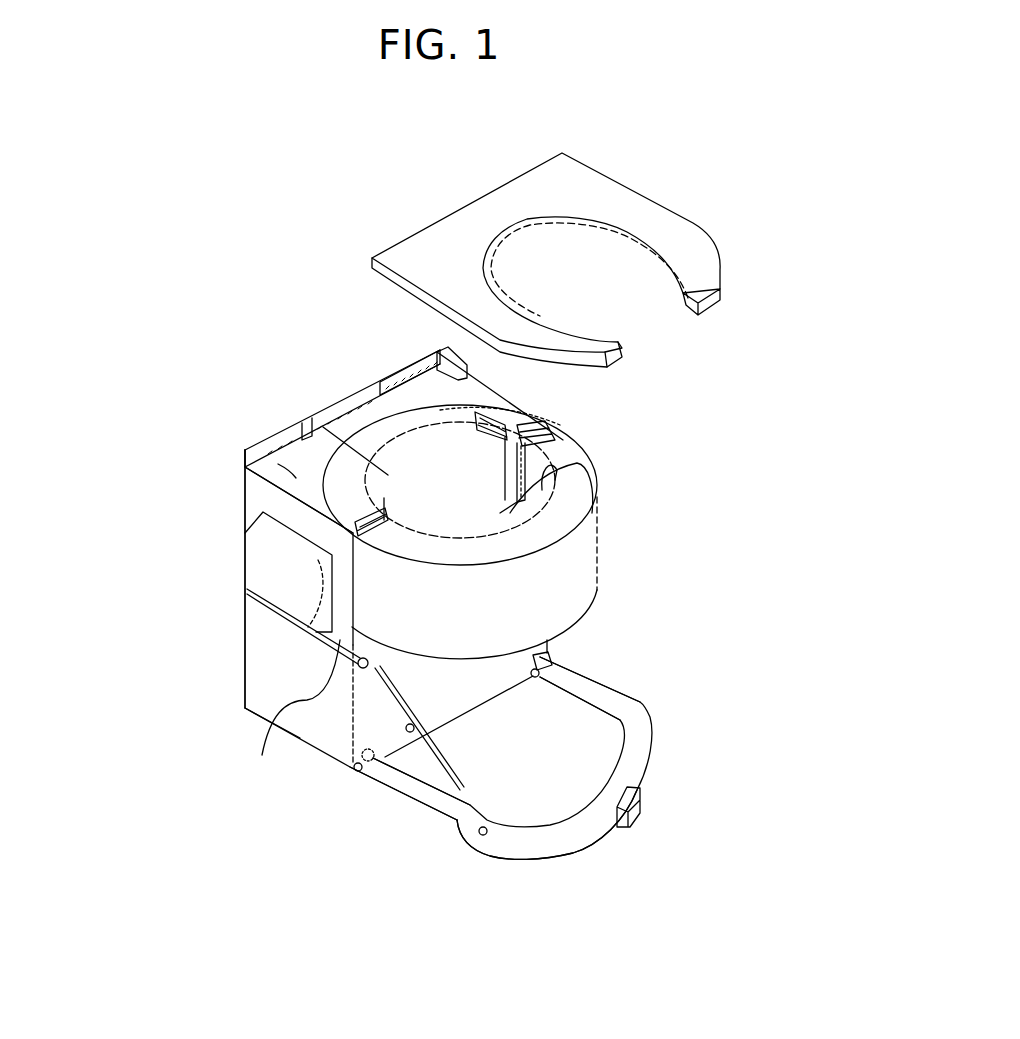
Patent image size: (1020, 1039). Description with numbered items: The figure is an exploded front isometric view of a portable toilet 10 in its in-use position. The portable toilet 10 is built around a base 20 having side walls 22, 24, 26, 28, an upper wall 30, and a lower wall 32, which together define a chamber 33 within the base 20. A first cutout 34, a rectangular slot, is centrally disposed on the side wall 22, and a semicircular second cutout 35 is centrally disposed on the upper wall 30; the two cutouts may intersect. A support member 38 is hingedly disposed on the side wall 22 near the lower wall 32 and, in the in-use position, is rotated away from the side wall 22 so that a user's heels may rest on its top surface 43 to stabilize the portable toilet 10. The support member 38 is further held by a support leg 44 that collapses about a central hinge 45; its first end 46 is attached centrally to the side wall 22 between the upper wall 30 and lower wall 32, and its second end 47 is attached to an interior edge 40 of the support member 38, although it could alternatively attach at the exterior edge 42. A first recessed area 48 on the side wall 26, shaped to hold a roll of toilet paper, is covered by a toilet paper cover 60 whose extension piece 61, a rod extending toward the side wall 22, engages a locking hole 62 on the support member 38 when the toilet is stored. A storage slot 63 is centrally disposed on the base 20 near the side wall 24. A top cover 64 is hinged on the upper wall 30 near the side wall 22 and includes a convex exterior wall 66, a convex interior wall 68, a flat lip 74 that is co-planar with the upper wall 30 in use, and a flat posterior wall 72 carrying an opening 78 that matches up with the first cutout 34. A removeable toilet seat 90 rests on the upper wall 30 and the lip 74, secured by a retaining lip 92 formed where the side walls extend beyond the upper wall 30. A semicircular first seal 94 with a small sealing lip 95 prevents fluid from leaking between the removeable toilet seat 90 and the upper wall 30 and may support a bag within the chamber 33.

The portable toilet 10 is at (171, 364).
The base 20 is at (244, 710).
The side wall 22 is at (503, 673).
The side wall 24 is at (331, 428).
The side wall 26 is at (260, 638).
The side wall 28 is at (510, 402).
The upper wall 30 is at (277, 466).
The lower wall 32 is at (258, 718).
The chamber 33 is at (302, 425).
The first cutout 34 is at (540, 423).
The second cutout 35 is at (480, 417).
The support member 38 is at (653, 740).
The interior edge 40 is at (600, 707).
The exterior edge 42 is at (593, 840).
The top surface 43 is at (587, 683).
The support leg 44 is at (360, 773).
The central hinge 45 is at (410, 732).
The first end 46 is at (375, 670).
The second end 47 is at (457, 812).
The first recessed area 48 is at (313, 588).
The toilet paper cover 60 is at (248, 562).
The extension piece 61 is at (292, 713).
The locking hole 62 is at (487, 828).
The storage slot 63 is at (423, 383).
The top cover 64 is at (599, 571).
The convex exterior wall 66 is at (577, 547).
The convex interior wall 68 is at (573, 462).
The flat posterior wall 72 is at (352, 609).
The flat lip 74 is at (570, 497).
The opening 78 is at (535, 442).
The removeable toilet seat 90 is at (634, 567).
The retaining lip 92 is at (440, 347).
The first seal 94 is at (378, 420).
The sealing lip 95 is at (383, 500).